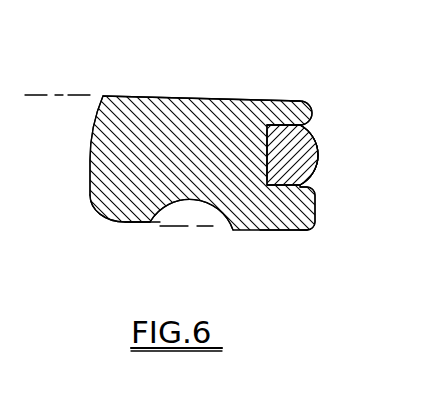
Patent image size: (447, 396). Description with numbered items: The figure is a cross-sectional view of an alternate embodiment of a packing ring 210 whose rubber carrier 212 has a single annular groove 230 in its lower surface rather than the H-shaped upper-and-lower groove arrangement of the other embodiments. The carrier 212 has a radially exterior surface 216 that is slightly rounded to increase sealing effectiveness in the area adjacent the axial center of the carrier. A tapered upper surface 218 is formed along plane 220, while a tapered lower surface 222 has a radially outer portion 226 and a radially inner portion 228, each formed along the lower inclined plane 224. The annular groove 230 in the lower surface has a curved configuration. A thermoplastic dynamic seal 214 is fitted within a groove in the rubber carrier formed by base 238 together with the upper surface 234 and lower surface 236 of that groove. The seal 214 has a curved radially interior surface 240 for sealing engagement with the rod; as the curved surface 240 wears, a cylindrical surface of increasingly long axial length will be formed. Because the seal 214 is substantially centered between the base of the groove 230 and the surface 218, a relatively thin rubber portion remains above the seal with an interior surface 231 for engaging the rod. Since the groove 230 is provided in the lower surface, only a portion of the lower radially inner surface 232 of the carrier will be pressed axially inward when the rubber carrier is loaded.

The packing ring 210 is at (216, 198).
The rubber carrier 212 is at (207, 166).
The thermoplastic dynamic seal 214 is at (298, 146).
The radially exterior surface 216 is at (88, 148).
The tapered upper surface 218 is at (142, 97).
The plane 220 is at (42, 95).
The tapered lower surface 222 is at (145, 223).
The lower inclined plane 224 is at (207, 228).
The radially outer portion 226 is at (118, 222).
The radially inner portion 228 is at (296, 233).
The annular groove 230 is at (192, 200).
The interior surface 231 is at (312, 108).
The lower radially inner surface 232 is at (317, 210).
The upper surface 234 is at (282, 125).
The lower surface 236 is at (280, 189).
The base 238 is at (267, 145).
The curved radially interior surface 240 is at (320, 161).